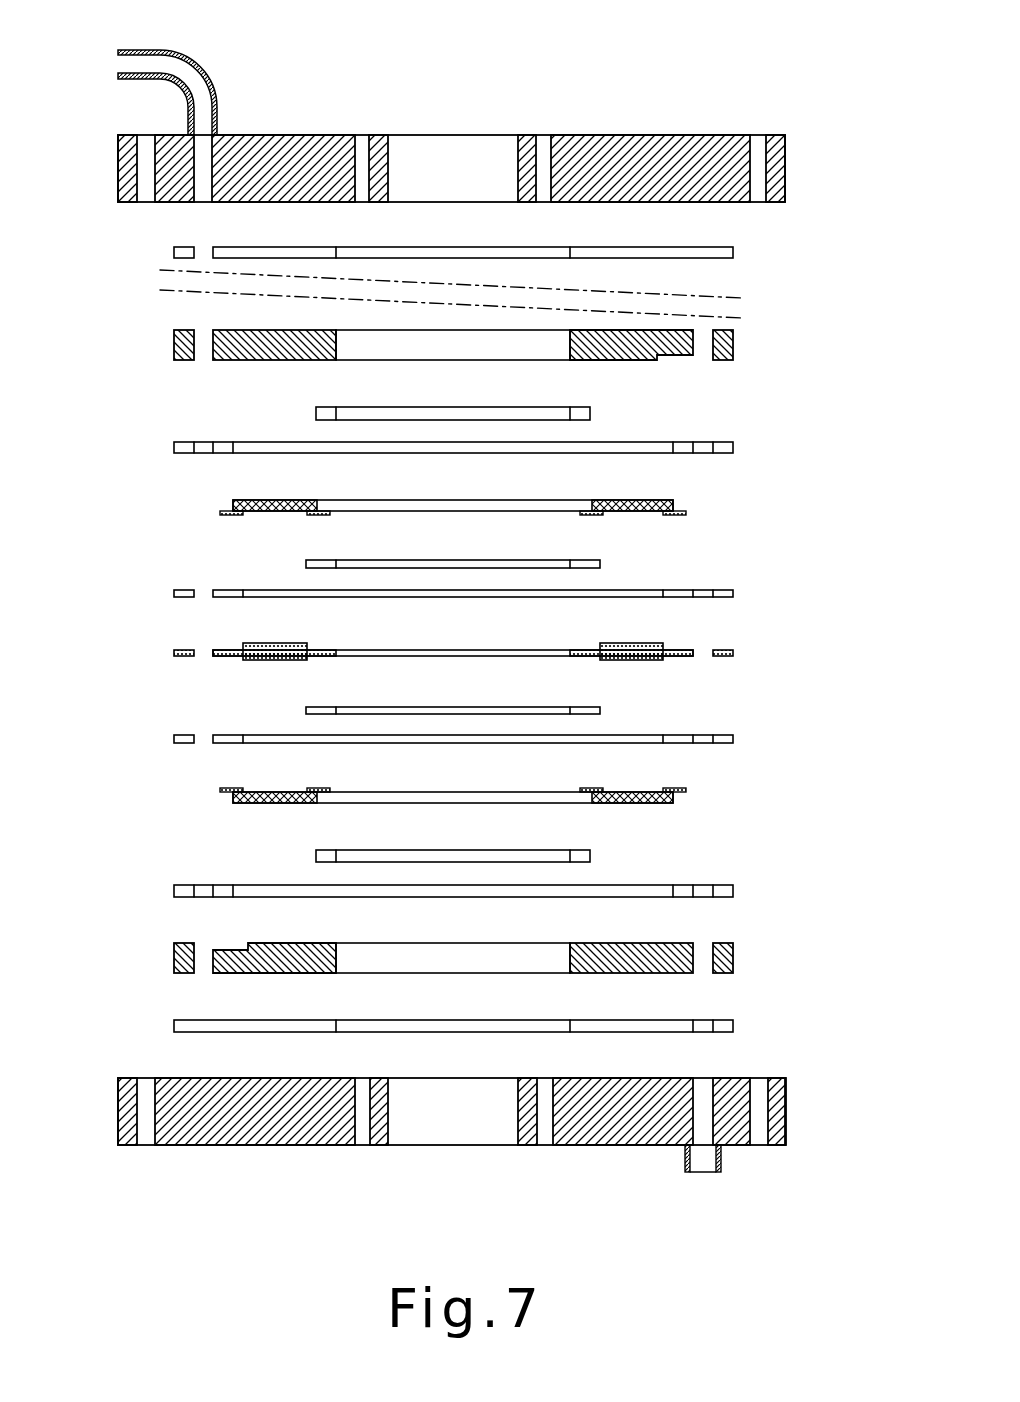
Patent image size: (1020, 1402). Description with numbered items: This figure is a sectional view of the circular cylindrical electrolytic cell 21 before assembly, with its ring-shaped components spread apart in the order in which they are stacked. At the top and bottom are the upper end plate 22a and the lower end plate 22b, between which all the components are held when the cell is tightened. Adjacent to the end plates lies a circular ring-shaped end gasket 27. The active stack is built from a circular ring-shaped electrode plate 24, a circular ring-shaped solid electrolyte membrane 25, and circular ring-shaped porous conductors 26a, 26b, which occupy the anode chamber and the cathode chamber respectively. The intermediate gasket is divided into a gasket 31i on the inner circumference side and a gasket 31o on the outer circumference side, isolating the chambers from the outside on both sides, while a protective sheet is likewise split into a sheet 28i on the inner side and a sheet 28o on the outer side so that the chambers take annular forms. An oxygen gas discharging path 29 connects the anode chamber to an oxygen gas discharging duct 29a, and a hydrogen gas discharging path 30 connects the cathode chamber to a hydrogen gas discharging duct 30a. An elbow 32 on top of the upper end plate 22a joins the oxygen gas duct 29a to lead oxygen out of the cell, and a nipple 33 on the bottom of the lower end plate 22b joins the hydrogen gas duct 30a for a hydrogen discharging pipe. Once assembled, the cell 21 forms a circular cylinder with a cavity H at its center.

The circular cylindrical electrolytic cell 21 is at (533, 84).
The upper end plate 22a is at (718, 135).
The lower end plate 22b is at (265, 1112).
The circular ring-shaped electrode plate 24 is at (174, 343).
The circular ring-shaped solid electrolyte membrane 25 is at (733, 653).
The circular ring-shaped porous conductor 26a is at (673, 800).
The circular ring-shaped porous conductor 26b is at (673, 503).
The circular ring-shaped end gasket 27 is at (733, 253).
The protective sheet 28i is at (306, 565).
The protective sheet 28o is at (174, 594).
The oxygen gas discharging path 29 is at (227, 947).
The oxygen gas discharging duct 29a is at (203, 348).
The hydrogen gas discharging path 30 is at (672, 357).
The hydrogen gas discharging duct 30a is at (703, 968).
The gasket 31i is at (590, 414).
The gasket 31o is at (733, 448).
The elbow 32 is at (200, 73).
The nipple 33 is at (722, 1163).
The cavity H is at (452, 1046).